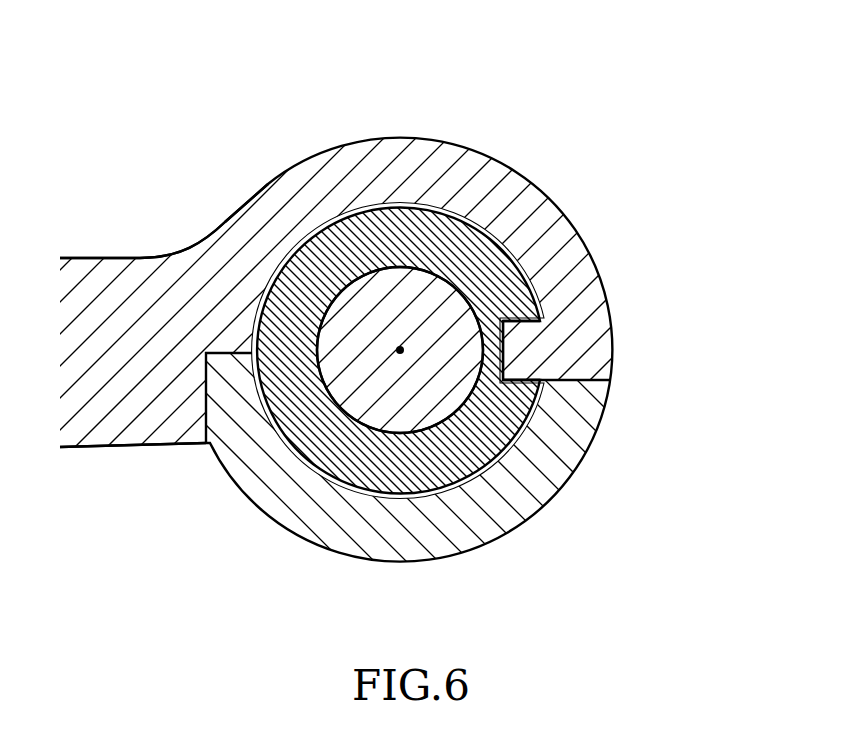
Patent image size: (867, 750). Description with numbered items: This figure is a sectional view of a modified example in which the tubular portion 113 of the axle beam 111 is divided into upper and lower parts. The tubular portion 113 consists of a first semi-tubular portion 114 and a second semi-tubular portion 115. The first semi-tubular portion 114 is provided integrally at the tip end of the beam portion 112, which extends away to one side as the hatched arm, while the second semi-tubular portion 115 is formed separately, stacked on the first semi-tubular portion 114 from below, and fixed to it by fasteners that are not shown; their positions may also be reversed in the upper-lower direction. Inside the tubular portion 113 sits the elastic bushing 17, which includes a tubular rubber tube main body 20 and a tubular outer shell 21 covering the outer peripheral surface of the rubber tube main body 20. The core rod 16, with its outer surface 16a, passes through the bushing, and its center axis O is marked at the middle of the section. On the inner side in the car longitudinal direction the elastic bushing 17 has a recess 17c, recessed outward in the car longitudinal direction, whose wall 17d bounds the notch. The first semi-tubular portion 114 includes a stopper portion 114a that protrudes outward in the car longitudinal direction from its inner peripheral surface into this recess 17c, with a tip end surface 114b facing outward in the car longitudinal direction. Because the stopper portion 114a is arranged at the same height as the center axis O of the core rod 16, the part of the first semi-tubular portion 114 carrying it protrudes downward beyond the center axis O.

The axle beam 111 is at (150, 206).
The beam portion 112 is at (79, 258).
The tubular portion 113 is at (718, 345).
The first semi-tubular portion 114 is at (612, 354).
The stopper portion 114a is at (527, 362).
The tip end surface 114b is at (512, 345).
The second semi-tubular portion 115 is at (612, 398).
The elastic bushing 17 is at (297, 71).
The recess 17c is at (540, 300).
The notch upper wall 17d is at (505, 275).
The rubber tube main body 20 is at (318, 262).
The outer shell 21 is at (265, 282).
The core rod 16 is at (350, 393).
The shaft outer surface 16a is at (400, 350).
The center axis O is at (400, 346).